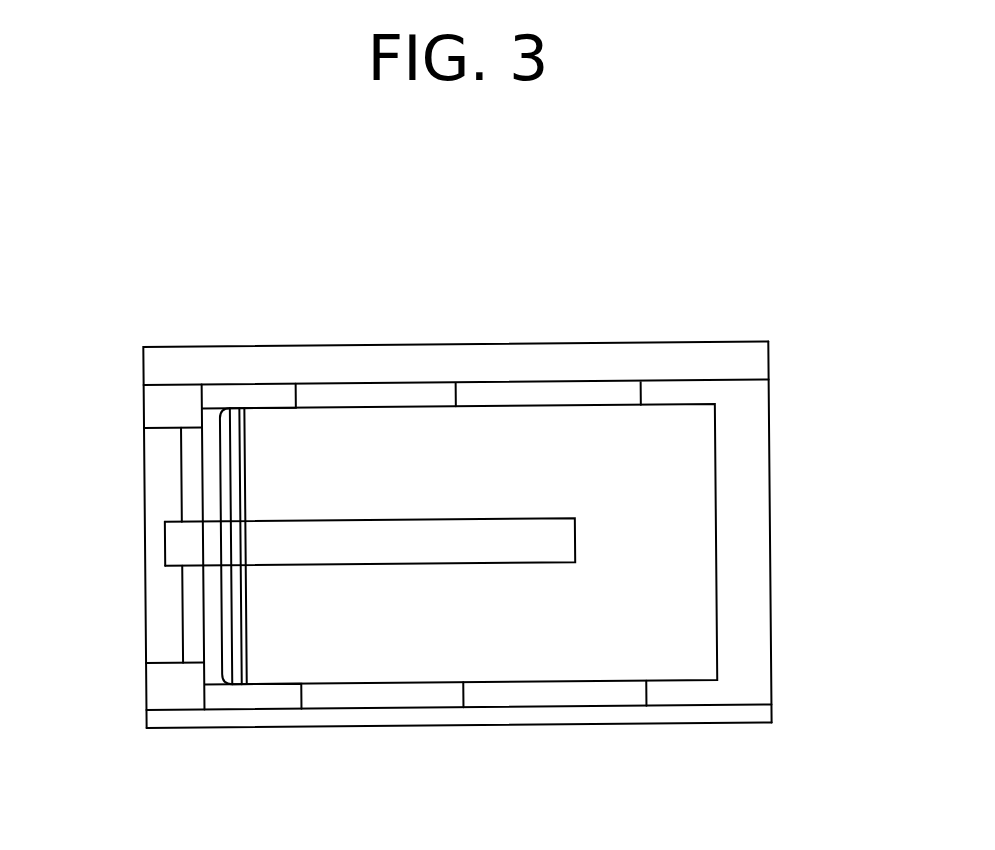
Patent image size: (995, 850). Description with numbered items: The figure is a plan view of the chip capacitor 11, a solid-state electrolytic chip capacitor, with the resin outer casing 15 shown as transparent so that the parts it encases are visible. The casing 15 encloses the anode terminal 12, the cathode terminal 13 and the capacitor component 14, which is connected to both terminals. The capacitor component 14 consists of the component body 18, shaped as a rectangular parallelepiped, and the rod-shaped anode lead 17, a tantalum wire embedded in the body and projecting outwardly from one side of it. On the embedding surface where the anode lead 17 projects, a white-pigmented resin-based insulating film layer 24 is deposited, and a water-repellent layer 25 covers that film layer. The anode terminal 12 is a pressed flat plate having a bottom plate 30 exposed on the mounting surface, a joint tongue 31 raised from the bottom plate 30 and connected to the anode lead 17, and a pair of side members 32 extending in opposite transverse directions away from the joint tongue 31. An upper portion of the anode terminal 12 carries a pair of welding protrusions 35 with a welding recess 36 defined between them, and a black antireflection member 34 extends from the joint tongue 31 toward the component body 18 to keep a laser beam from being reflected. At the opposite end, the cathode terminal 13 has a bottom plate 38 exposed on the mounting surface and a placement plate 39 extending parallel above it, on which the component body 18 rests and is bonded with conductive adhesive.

The chip capacitor 11 is at (785, 284).
The anode terminal 12 is at (181, 722).
The cathode terminal 13 is at (641, 722).
The capacitor component 14 is at (441, 452).
The resin outer casing 15 is at (652, 334).
The anode lead 17 is at (327, 545).
The component body 18 is at (385, 443).
The resin-based insulating film layer 24 is at (230, 497).
The water-repellent layer 25 is at (220, 453).
The bottom plate 30 is at (271, 712).
The joint tongue 31 is at (180, 615).
The side members 32 is at (158, 413).
The antireflection member 34 is at (245, 400).
The welding protrusions 35 is at (190, 437).
The welding recess 36 is at (180, 560).
The bottom plate 38 is at (762, 632).
The placement plate 39 is at (503, 695).